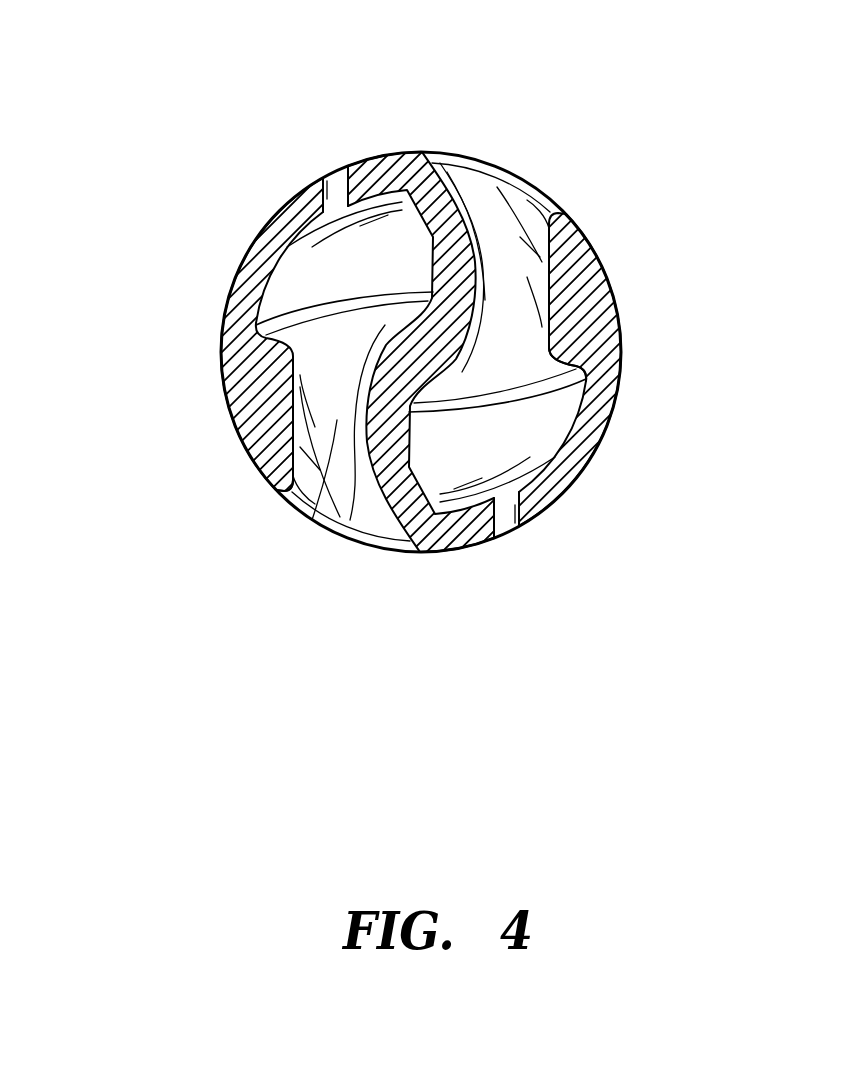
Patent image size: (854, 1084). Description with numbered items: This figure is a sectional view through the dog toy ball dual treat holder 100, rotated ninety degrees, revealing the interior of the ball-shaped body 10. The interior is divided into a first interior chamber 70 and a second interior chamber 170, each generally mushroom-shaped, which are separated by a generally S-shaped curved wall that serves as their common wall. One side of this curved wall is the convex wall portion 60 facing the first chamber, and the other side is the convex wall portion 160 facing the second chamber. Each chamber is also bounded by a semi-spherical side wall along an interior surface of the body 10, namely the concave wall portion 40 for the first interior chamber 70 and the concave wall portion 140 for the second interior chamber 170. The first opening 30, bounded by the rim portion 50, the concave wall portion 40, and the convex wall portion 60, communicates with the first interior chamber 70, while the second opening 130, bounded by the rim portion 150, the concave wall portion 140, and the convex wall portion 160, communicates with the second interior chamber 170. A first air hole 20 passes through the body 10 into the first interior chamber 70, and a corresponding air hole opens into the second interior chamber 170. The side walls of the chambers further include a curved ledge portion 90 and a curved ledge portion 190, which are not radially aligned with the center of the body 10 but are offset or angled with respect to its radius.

The body 10 is at (623, 370).
The first air hole 20 is at (333, 163).
The first opening 30 is at (290, 511).
The concave wall portion 40 is at (312, 520).
The rim portion 50 is at (287, 490).
The convex wall portion 60 is at (350, 520).
The first interior chamber 70 is at (365, 276).
The ledge portion 90 is at (307, 320).
The dog toy ball dual treat holder 100 is at (173, 141).
The second opening 130 is at (552, 189).
The concave wall portion 140 is at (524, 193).
The rim portion 150 is at (560, 214).
The convex wall portion 160 is at (476, 240).
The second interior chamber 170 is at (520, 455).
The ledge portion 190 is at (533, 383).